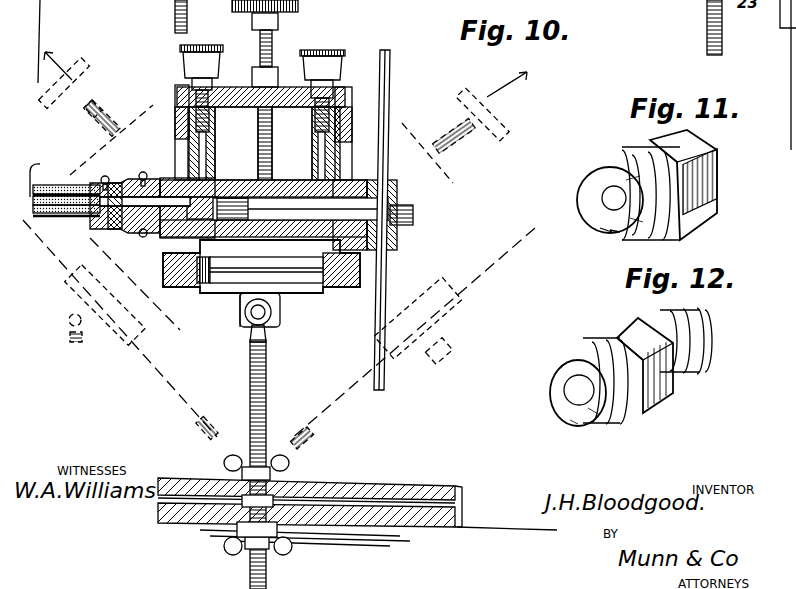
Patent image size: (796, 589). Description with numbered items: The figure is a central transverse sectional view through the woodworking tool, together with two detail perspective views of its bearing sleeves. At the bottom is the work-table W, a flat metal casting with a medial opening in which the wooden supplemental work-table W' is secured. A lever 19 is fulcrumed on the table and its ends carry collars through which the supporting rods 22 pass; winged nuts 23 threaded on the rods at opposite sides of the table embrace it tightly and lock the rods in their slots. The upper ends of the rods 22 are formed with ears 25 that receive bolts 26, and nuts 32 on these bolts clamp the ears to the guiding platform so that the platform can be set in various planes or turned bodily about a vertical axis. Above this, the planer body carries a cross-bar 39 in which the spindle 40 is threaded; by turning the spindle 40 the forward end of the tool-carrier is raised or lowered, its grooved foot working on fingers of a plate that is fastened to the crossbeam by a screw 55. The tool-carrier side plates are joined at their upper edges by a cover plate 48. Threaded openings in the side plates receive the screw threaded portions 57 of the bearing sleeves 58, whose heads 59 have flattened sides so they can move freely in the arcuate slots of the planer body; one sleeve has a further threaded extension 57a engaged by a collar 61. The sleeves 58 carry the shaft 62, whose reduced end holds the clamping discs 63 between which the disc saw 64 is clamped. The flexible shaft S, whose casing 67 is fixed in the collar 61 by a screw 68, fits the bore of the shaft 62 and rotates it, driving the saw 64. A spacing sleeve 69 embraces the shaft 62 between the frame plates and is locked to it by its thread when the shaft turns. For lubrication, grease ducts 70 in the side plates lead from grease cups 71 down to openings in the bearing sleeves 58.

In FIG. 10, the lever 19 is at (240, 532).
In FIG. 10, the supporting rods 22 is at (268, 395).
In FIG. 10, the winged nuts 23 is at (289, 467).
In FIG. 10, the ears 25 is at (278, 327).
In FIG. 10, the bolts 26 is at (282, 313).
In FIG. 10, the nuts 32 is at (248, 327).
In FIG. 10, the cross-bar 39 is at (232, 88).
In FIG. 10, the spindle 40 is at (273, 40).
In FIG. 10, the cover plate 48 is at (242, 107).
In FIG. 10, the screw 55 is at (411, 210).
In FIG. 11, the screw threaded portions 57 is at (671, 223).
In FIG. 12, the screw threaded portions 57 is at (704, 353).
In FIG. 12, the threaded extension 57a is at (613, 423).
In FIG. 10, the bearing sleeves 58 is at (130, 236).
In FIG. 11, the bearing sleeves 58 is at (605, 226).
In FIG. 12, the bearing sleeves 58 is at (583, 421).
In FIG. 10, the heads 59 is at (352, 190).
In FIG. 11, the heads 59 is at (712, 192).
In FIG. 12, the heads 59 is at (670, 392).
In FIG. 10, the collar 61 is at (127, 228).
In FIG. 10, the shaft 62 is at (280, 198).
In FIG. 10, the clamping discs 63 is at (392, 186).
In FIG. 10, the disc saw 64 is at (152, 360).
In FIG. 10, the casing 67 is at (62, 216).
In FIG. 10, the screw 68 is at (112, 172).
In FIG. 10, the spacing sleeve 69 is at (261, 266).
In FIG. 10, the grease ducts 70 is at (207, 146).
In FIG. 10, the grease cups 71 is at (207, 46).
In FIG. 10, the flexible shaft S is at (40, 180).
In FIG. 10, the work-table W is at (357, 528).
In FIG. 10, the supplemental work-table W' is at (306, 477).